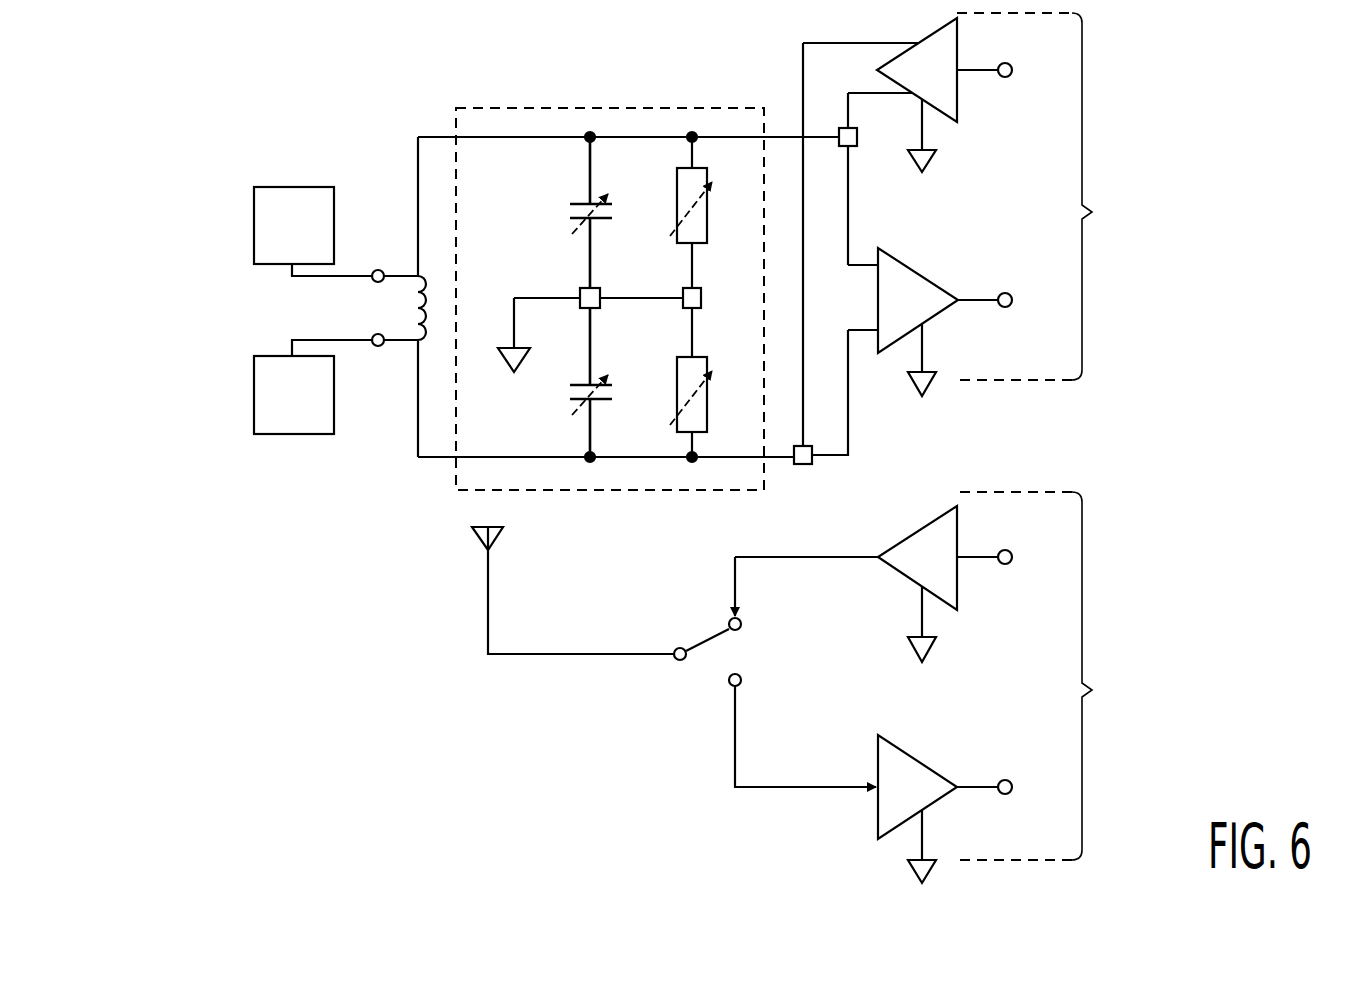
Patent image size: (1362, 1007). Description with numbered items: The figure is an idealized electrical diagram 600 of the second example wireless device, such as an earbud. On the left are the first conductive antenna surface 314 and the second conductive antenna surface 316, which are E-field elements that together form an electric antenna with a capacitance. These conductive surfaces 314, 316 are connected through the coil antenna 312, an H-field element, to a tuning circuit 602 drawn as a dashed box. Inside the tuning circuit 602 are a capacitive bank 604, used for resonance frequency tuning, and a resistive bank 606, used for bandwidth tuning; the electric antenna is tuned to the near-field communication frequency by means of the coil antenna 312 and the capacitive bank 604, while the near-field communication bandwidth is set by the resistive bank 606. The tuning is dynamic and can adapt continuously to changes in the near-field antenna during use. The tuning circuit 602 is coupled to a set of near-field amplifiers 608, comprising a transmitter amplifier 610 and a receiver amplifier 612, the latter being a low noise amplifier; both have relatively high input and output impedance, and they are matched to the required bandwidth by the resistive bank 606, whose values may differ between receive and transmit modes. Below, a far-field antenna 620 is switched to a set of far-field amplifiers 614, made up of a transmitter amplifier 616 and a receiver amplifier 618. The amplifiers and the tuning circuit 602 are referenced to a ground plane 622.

The idealized electrical diagram 600 is at (110, 138).
The tuning circuit 602 is at (627, 108).
The capacitive bank 604 is at (587, 202).
The resistive bank 606 is at (710, 215).
The set of near-field amplifiers 608 is at (1046, 196).
The transmitter amplifier 610 is at (947, 93).
The receiver amplifier 612 is at (923, 302).
The set of far-field amplifiers 614 is at (1047, 676).
The transmitter amplifier 616 is at (923, 542).
The receiver amplifier 618 is at (915, 772).
The far-field antenna 620 is at (475, 540).
The ground plane 622 is at (508, 348).
The coil antenna 312 is at (412, 300).
The first conductive antenna surface 314 is at (295, 187).
The second conductive antenna surface 316 is at (298, 434).